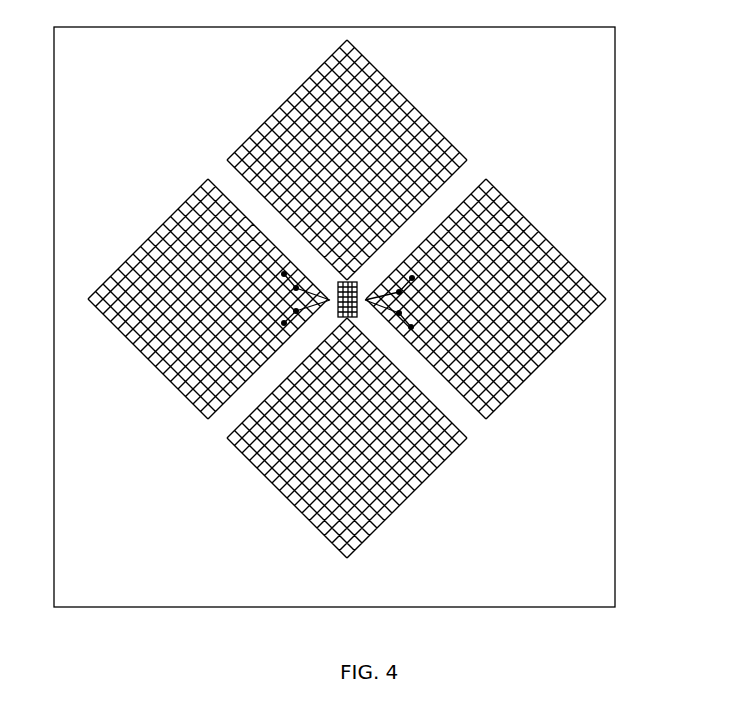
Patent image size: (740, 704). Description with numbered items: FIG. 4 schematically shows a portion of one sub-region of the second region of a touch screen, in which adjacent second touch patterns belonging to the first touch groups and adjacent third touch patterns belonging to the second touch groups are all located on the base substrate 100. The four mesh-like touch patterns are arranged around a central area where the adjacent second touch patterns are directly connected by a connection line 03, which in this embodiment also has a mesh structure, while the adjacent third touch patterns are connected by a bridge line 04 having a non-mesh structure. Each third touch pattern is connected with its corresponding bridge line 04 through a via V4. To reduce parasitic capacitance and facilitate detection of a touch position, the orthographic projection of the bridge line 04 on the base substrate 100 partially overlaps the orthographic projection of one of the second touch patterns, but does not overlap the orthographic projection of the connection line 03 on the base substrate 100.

The base substrate 100 is at (616, 518).
The via V4 is at (250, 225).
The connection line 03 is at (305, 330).
The bridge line 04 is at (388, 264).